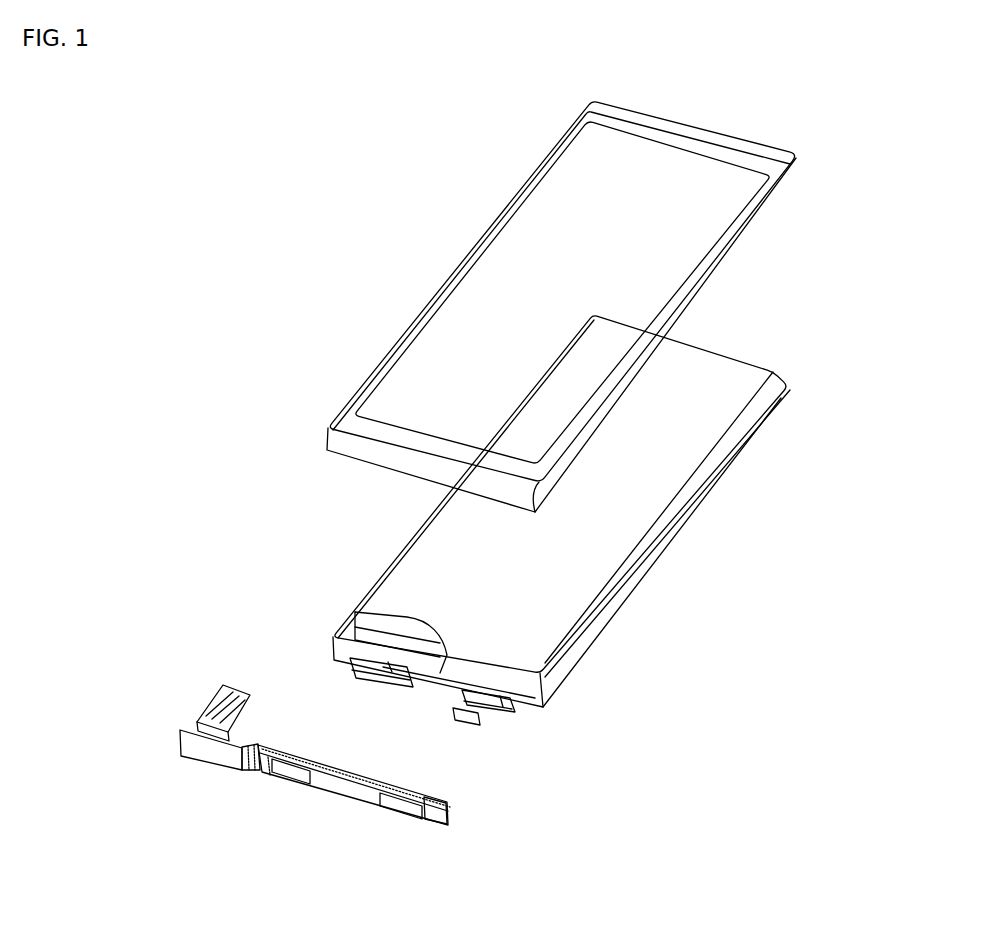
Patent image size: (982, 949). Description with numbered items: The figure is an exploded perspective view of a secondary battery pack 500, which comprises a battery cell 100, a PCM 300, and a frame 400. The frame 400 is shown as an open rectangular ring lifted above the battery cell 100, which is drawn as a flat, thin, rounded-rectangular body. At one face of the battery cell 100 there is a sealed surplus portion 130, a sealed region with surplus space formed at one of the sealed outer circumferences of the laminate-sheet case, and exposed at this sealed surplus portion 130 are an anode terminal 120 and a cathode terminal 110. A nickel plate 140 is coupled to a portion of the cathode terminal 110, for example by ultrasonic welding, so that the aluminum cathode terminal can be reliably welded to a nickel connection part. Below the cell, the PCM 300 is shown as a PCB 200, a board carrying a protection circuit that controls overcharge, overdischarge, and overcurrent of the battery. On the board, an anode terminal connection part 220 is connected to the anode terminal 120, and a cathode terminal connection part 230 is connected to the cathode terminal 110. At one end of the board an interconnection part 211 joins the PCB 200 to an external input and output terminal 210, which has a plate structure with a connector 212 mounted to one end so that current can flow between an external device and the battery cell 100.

The secondary battery pack 500 is at (285, 260).
The frame 400 is at (740, 277).
The battery cell 100 is at (735, 345).
The sealed surplus portion 130 is at (372, 607).
The anode terminal 120 is at (373, 661).
The cathode terminal 110 is at (485, 697).
The nickel plate 140 is at (465, 722).
The PCM 300 is at (508, 797).
The external input and output terminal 210 is at (100, 672).
The connector 212 is at (220, 703).
The interconnection part 211 is at (185, 745).
The PCB 200 is at (344, 807).
The anode terminal connection part 220 is at (287, 772).
The cathode terminal connection part 230 is at (393, 807).